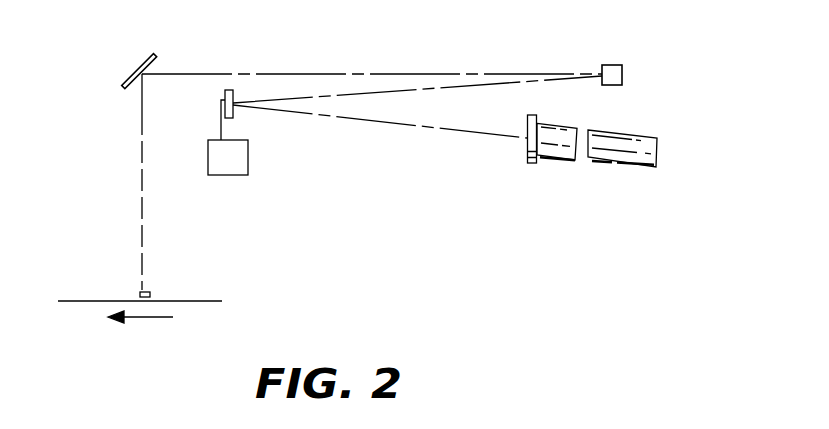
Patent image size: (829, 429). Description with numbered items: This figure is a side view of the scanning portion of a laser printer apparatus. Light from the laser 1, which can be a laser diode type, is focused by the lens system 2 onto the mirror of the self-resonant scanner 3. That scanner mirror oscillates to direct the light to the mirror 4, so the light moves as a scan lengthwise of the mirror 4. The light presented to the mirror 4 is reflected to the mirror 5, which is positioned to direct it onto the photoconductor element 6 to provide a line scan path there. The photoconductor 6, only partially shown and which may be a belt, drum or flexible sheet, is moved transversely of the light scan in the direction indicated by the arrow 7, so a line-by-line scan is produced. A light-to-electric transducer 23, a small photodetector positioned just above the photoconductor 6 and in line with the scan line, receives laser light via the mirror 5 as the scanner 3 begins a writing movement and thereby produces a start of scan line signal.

The laser 1 is at (640, 138).
The lens system 2 is at (547, 163).
The self-resonant scanner 3 is at (239, 175).
The mirror 4 is at (617, 63).
The mirror 5 is at (134, 73).
The photoconductor element 6 is at (203, 300).
The arrow 7 is at (142, 317).
The light-to-electric transducer 23 is at (140, 292).